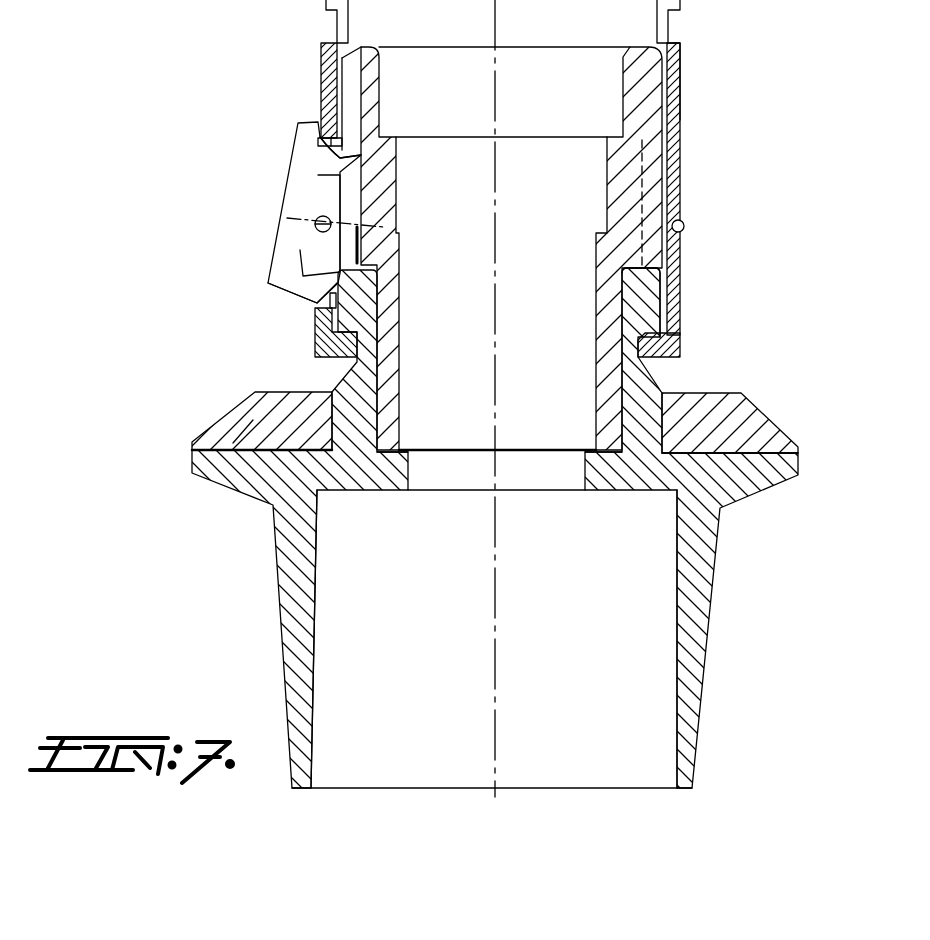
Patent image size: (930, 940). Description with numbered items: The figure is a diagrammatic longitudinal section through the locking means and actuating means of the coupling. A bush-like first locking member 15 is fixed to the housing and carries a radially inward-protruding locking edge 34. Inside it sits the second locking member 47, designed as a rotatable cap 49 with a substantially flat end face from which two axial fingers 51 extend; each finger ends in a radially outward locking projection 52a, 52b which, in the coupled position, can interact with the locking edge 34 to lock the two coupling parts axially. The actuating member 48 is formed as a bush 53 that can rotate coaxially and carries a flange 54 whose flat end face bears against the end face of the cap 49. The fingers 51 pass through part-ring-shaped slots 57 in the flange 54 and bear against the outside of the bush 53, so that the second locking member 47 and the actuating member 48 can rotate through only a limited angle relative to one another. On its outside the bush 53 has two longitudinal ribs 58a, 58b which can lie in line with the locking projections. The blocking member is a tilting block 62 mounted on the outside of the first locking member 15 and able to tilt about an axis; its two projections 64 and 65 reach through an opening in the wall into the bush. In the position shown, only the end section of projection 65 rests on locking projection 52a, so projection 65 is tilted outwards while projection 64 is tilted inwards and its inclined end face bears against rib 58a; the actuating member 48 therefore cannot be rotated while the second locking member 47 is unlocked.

The first locking member 15 is at (678, 115).
The locking edge 34 is at (650, 345).
The second locking member 47 is at (725, 513).
The actuating member 48 is at (230, 410).
The cap 49 is at (697, 605).
The axial fingers 51 is at (637, 390).
The locking projection 52a is at (355, 308).
The locking projection 52b is at (647, 294).
The bush 53 is at (615, 248).
The flange 54 is at (213, 478).
The slots 57 is at (262, 493).
The longitudinal rib 58a is at (357, 72).
The longitudinal rib 58b is at (672, 80).
The tilting block 62 is at (307, 192).
The projection 64 is at (340, 160).
The projection 65 is at (306, 289).